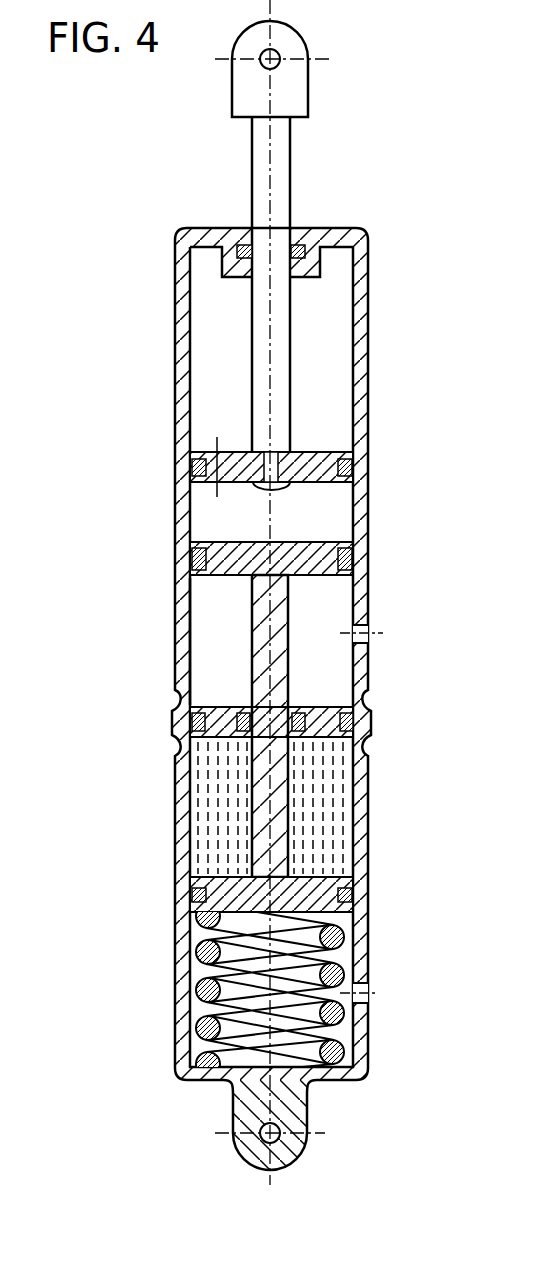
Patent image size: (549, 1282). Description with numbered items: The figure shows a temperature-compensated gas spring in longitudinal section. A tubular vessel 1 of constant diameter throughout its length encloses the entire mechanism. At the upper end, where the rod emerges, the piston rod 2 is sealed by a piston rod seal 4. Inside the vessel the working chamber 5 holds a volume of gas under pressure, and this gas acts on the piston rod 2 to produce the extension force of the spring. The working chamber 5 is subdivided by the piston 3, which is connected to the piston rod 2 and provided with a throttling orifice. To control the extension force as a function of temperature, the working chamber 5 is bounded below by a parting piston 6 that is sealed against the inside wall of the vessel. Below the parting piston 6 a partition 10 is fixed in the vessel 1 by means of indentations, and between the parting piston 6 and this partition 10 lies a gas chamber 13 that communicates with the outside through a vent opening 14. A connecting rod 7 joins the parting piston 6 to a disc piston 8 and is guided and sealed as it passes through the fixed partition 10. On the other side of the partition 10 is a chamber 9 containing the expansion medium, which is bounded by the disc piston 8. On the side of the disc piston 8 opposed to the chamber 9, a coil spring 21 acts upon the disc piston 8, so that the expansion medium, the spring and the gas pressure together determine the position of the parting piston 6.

The vessel 1 is at (177, 588).
The piston rod 2 is at (258, 175).
The piston 3 is at (322, 462).
The piston rod seal 4 is at (297, 245).
The working chamber 5 is at (230, 333).
The parting piston 6 is at (213, 549).
The connecting rod 7 is at (286, 666).
The disc piston 8 is at (322, 888).
The chamber 9 is at (222, 790).
The partition 10 is at (192, 707).
The gas chamber 13 is at (216, 636).
The vent opening 14 is at (383, 633).
The coil spring 21 is at (353, 1050).